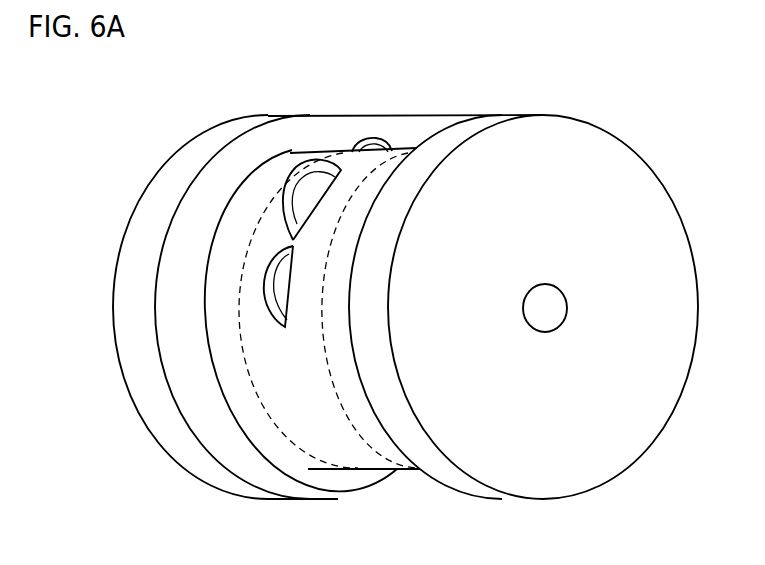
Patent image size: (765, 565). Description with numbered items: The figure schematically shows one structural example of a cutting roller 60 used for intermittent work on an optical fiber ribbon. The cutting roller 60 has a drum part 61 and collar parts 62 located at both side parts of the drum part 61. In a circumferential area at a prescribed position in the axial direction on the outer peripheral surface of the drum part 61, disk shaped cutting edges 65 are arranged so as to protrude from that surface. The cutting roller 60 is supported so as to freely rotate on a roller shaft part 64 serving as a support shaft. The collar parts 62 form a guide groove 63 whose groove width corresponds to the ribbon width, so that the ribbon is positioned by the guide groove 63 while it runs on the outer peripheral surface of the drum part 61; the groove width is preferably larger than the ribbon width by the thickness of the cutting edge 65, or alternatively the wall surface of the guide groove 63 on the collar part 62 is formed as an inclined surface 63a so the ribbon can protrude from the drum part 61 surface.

The cutting roller 60 is at (640, 136).
The drum part 61 is at (338, 464).
The collar part 62 is at (177, 437).
The guide groove 63 is at (203, 363).
The inclined surface 63a is at (235, 456).
The roller shaft part 64 is at (552, 316).
The cutting edge 65 is at (293, 170).